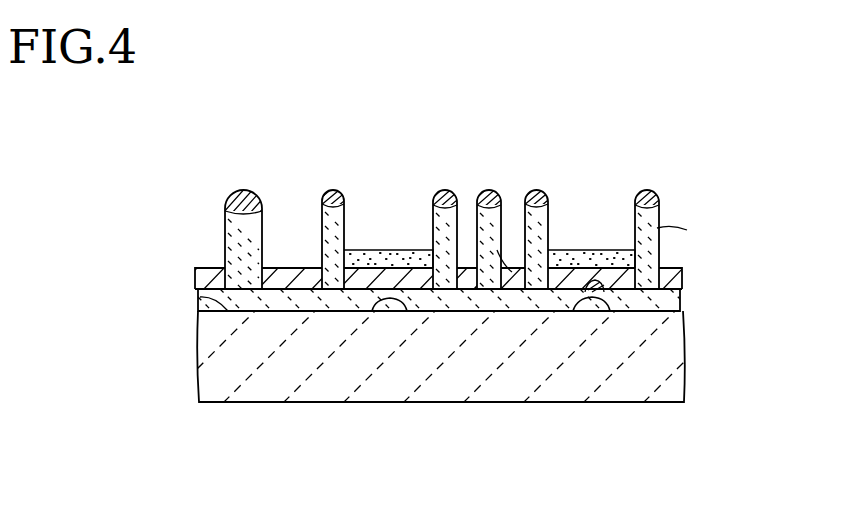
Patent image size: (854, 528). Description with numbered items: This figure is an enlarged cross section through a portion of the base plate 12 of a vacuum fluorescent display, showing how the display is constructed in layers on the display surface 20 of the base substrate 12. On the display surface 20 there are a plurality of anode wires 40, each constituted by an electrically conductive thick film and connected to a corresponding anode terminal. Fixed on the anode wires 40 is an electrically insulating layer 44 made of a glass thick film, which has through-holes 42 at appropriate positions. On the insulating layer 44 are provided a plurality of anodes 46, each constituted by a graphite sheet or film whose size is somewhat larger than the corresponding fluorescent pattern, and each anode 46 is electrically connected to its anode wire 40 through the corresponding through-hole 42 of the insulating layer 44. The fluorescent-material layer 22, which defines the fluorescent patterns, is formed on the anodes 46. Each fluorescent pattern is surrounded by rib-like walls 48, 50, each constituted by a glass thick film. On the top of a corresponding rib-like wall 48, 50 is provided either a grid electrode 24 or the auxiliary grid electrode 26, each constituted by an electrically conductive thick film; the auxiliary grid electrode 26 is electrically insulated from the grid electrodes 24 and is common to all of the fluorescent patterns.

The base substrate 12 is at (675, 375).
The display surface 20 is at (200, 297).
The fluorescent-material layer 22 is at (376, 250).
The grid electrode 24 is at (242, 192).
The auxiliary grid electrode 26 is at (491, 190).
The anode wire 40 is at (388, 311).
The through-hole 42 is at (618, 291).
The insulating layer 44 is at (672, 296).
The anode 46 is at (415, 277).
The rib-like wall 48 is at (687, 230).
The rib-like wall 50 is at (512, 272).